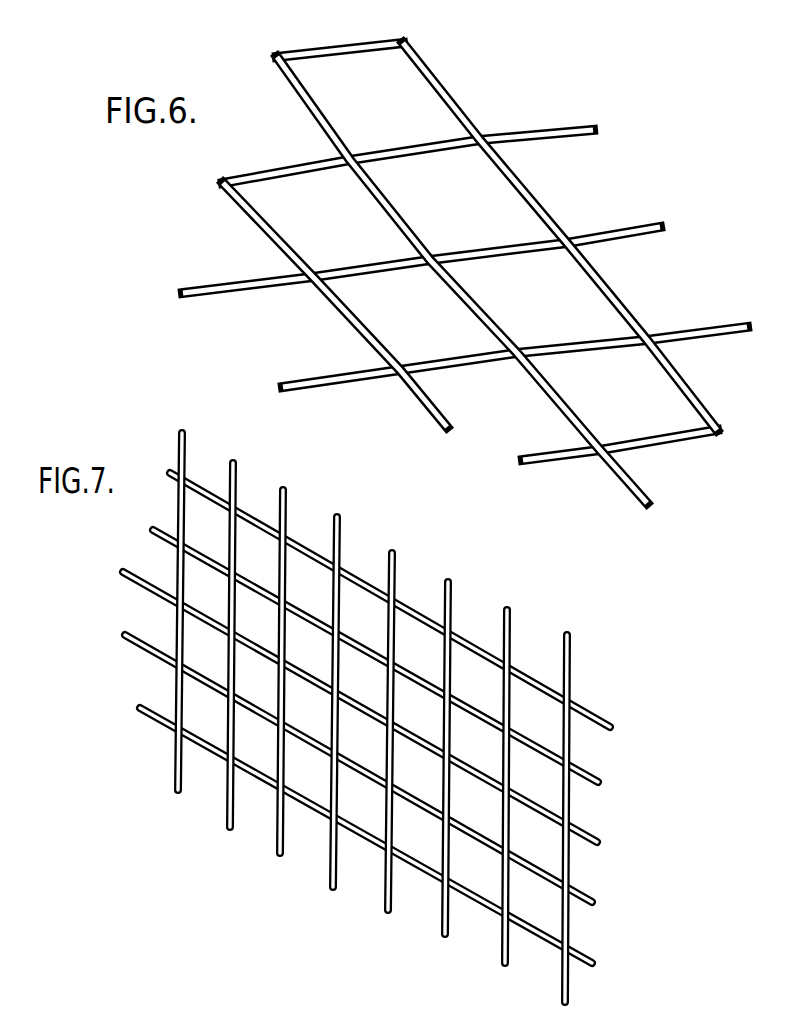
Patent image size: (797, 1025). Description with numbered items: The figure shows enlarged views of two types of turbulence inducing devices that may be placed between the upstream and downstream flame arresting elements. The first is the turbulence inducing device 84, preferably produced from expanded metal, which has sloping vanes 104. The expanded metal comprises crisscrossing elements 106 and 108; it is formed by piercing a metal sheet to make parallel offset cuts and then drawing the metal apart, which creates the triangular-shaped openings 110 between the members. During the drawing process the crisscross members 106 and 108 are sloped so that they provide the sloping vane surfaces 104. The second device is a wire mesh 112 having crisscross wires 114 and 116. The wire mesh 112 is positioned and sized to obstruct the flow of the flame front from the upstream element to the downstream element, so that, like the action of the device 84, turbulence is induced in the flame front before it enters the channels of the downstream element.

In FIG. 6, the turbulence inducing device 84 is at (465, 255).
In FIG. 6, the sloping vanes 104 is at (427, 72).
In FIG. 6, the crisscrossing element 106 is at (300, 107).
In FIG. 6, the crisscrossing element 108 is at (427, 160).
In FIG. 6, the triangular-shaped openings 110 is at (283, 240).
In FIG. 7, the wire mesh 112 is at (396, 717).
In FIG. 7, the crisscross wire 114 is at (400, 570).
In FIG. 7, the crisscross wire 116 is at (475, 640).